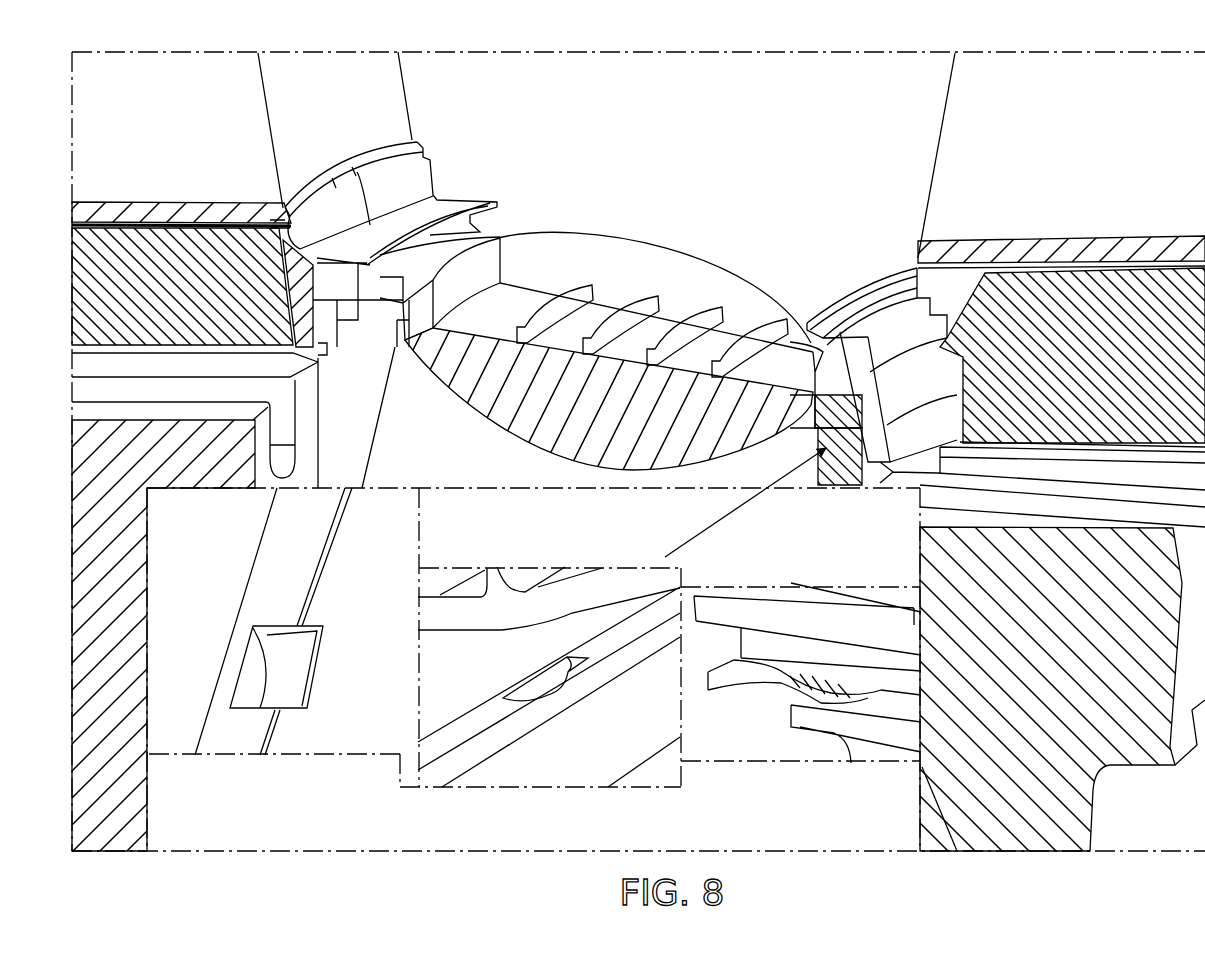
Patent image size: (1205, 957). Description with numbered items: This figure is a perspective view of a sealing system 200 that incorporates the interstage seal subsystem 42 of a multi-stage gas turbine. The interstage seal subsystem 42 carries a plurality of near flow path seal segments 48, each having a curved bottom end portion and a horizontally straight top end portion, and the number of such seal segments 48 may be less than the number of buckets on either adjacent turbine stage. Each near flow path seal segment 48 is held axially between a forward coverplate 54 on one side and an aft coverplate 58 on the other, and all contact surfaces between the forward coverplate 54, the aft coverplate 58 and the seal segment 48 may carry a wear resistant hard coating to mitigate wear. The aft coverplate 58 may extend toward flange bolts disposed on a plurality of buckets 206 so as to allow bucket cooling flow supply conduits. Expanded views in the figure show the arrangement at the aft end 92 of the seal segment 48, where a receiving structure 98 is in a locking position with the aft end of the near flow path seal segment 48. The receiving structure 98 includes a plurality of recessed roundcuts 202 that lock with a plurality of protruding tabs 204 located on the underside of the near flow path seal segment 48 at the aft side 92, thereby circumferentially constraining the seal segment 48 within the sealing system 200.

The sealing system 200 is at (461, 72).
The buckets 206 is at (947, 92).
The aft end 92 is at (876, 236).
The aft coverplate 58 is at (832, 312).
The forward coverplate 54 is at (583, 250).
The interstage seal subsystem 42 is at (668, 204).
The near flow path seal segment 48 is at (738, 318).
The receiving structure 98 is at (848, 412).
The protruding tabs 204 is at (288, 680).
The recessed roundcuts 202 is at (791, 700).